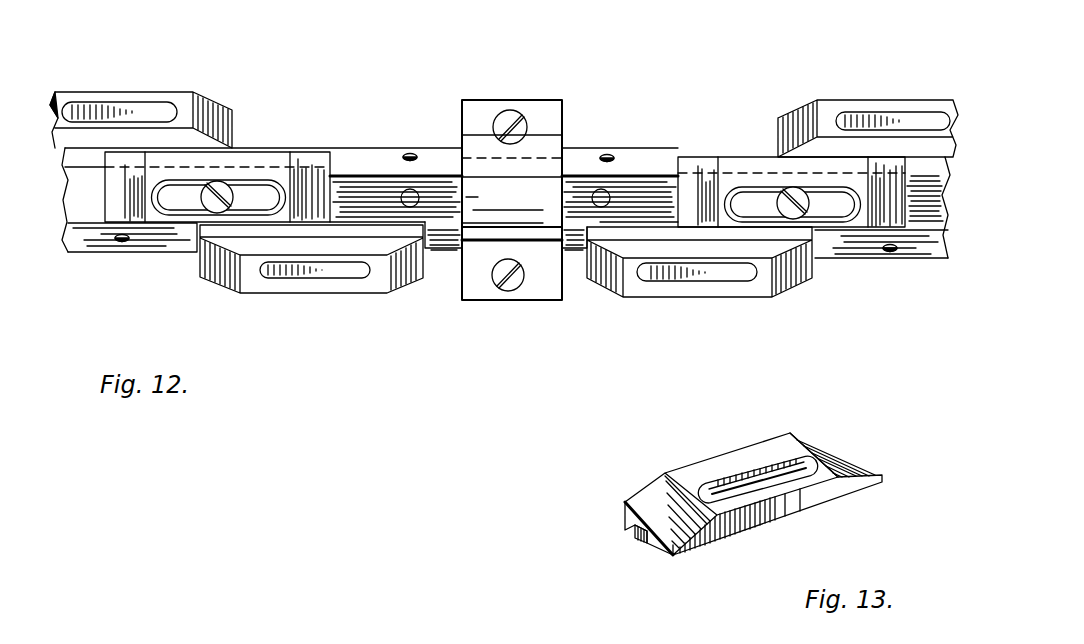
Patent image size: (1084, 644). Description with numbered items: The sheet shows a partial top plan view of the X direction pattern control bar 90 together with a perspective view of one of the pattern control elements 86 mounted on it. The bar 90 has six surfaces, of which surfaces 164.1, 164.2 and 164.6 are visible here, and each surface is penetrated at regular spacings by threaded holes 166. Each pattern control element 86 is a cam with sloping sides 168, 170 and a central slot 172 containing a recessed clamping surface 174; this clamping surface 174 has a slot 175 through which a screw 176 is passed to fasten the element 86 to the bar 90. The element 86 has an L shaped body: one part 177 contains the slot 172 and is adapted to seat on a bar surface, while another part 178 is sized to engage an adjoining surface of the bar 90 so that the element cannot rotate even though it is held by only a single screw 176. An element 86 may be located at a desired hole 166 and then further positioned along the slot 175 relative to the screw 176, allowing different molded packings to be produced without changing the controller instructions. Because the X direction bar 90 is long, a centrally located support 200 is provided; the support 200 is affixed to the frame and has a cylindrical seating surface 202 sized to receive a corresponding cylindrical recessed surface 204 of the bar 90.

In FIG. 12, the pattern control element 86 is at (125, 102).
In FIG. 13, the pattern control element 86 is at (746, 504).
In FIG. 12, the pattern control bar 90 is at (622, 147).
In FIG. 12, the surface 164.1 is at (428, 182).
In FIG. 12, the surface 164.2 is at (440, 252).
In FIG. 12, the surface 164.6 is at (355, 150).
In FIG. 12, the threaded hole 166 is at (607, 160).
In FIG. 12, the sloping side 168 is at (122, 203).
In FIG. 13, the sloping side 168 is at (652, 502).
In FIG. 12, the sloping side 170 is at (317, 157).
In FIG. 13, the sloping side 170 is at (843, 447).
In FIG. 13, the central slot 172 is at (735, 483).
In FIG. 12, the recessed clamping surface 174 is at (248, 212).
In FIG. 13, the recessed clamping surface 174 is at (767, 470).
In FIG. 12, the slot 175 is at (185, 202).
In FIG. 13, the slot 175 is at (788, 487).
In FIG. 12, the screw 176 is at (248, 188).
In FIG. 13, the part of L-shaped body 177 is at (665, 547).
In FIG. 13, the part of L-shaped body 178 is at (630, 540).
In FIG. 12, the support 200 is at (538, 98).
In FIG. 12, the cylindrical seating surface 202 is at (478, 247).
In FIG. 12, the cylindrical recessed surface 204 is at (473, 197).